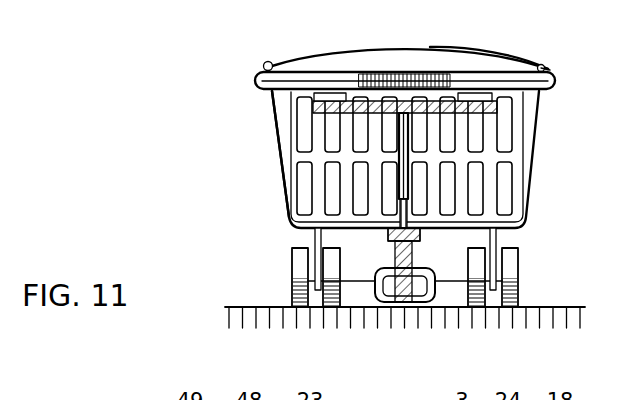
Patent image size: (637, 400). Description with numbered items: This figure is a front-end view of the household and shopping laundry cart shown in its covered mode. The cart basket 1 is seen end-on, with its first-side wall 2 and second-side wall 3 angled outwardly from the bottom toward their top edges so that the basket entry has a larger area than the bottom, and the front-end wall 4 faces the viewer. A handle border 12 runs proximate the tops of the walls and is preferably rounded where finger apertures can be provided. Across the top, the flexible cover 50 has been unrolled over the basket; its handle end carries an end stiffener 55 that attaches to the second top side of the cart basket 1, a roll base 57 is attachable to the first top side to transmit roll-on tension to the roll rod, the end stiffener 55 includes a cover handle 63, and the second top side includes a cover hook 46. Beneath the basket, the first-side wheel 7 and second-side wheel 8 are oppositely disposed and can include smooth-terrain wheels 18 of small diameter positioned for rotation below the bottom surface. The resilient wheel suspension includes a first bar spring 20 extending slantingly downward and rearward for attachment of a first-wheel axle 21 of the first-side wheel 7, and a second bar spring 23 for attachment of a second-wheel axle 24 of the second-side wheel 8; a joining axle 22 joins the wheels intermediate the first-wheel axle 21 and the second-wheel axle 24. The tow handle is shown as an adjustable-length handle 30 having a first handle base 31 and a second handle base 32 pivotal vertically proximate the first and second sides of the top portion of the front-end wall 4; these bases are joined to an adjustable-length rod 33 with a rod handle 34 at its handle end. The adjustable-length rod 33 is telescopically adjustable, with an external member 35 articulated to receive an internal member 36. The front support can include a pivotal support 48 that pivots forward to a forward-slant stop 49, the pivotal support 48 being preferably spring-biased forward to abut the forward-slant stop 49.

The cart basket 1 is at (562, 186).
The first-side wall 2 is at (527, 150).
The second-side wall 3 is at (278, 138).
The front-end wall 4 is at (375, 145).
The first-side wheel 7 is at (480, 298).
The second-side wheel 8 is at (334, 299).
The handle border 12 is at (411, 77).
The smooth-terrain wheels 18 is at (538, 281).
The first bar spring 20 is at (498, 245).
The first-wheel axle 21 is at (494, 279).
The joining axle 22 is at (357, 283).
The second bar spring 23 is at (315, 245).
The second-wheel axle 24 is at (312, 279).
The adjustable-length handle 30 is at (405, 318).
The first handle base 31 is at (476, 98).
The second handle base 32 is at (330, 103).
The adjustable-length rod 33 is at (410, 198).
The rod handle 34 is at (418, 306).
The external member 35 is at (402, 158).
The internal member 36 is at (402, 199).
The cover hook 46 is at (549, 67).
The pivotal support 48 is at (389, 262).
The forward-slant stop 49 is at (417, 243).
The flexible cover 50 is at (372, 52).
The end stiffener 55 is at (498, 58).
The roll base 57 is at (266, 61).
The cover handle 63 is at (538, 65).